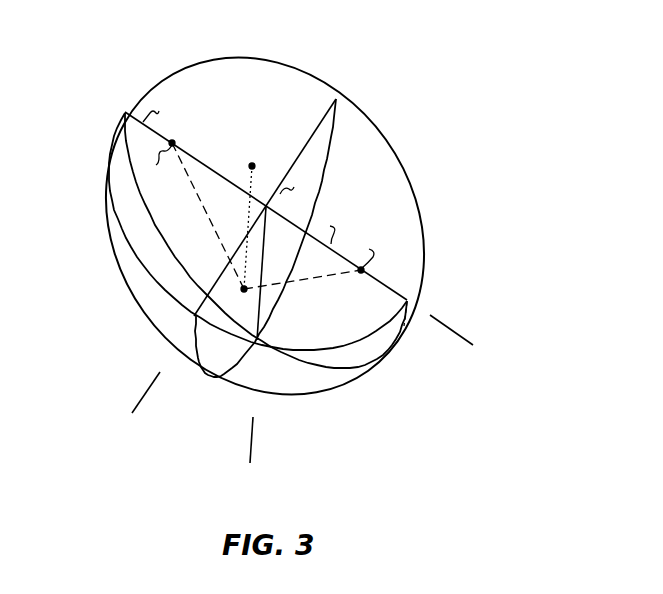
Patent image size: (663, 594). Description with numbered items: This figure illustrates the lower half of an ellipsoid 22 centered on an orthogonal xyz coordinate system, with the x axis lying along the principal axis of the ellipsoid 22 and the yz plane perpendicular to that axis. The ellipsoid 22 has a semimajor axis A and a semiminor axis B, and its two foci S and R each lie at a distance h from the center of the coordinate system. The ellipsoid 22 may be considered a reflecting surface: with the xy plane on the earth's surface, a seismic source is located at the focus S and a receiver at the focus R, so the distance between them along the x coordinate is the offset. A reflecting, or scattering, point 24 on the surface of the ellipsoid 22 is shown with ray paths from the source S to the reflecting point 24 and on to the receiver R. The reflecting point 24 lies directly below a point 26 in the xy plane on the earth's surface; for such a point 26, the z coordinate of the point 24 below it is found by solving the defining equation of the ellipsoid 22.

The ellipsoid 22 is at (438, 168).
The reflecting point 24 is at (244, 292).
The point on the earth's surface 26 is at (250, 164).